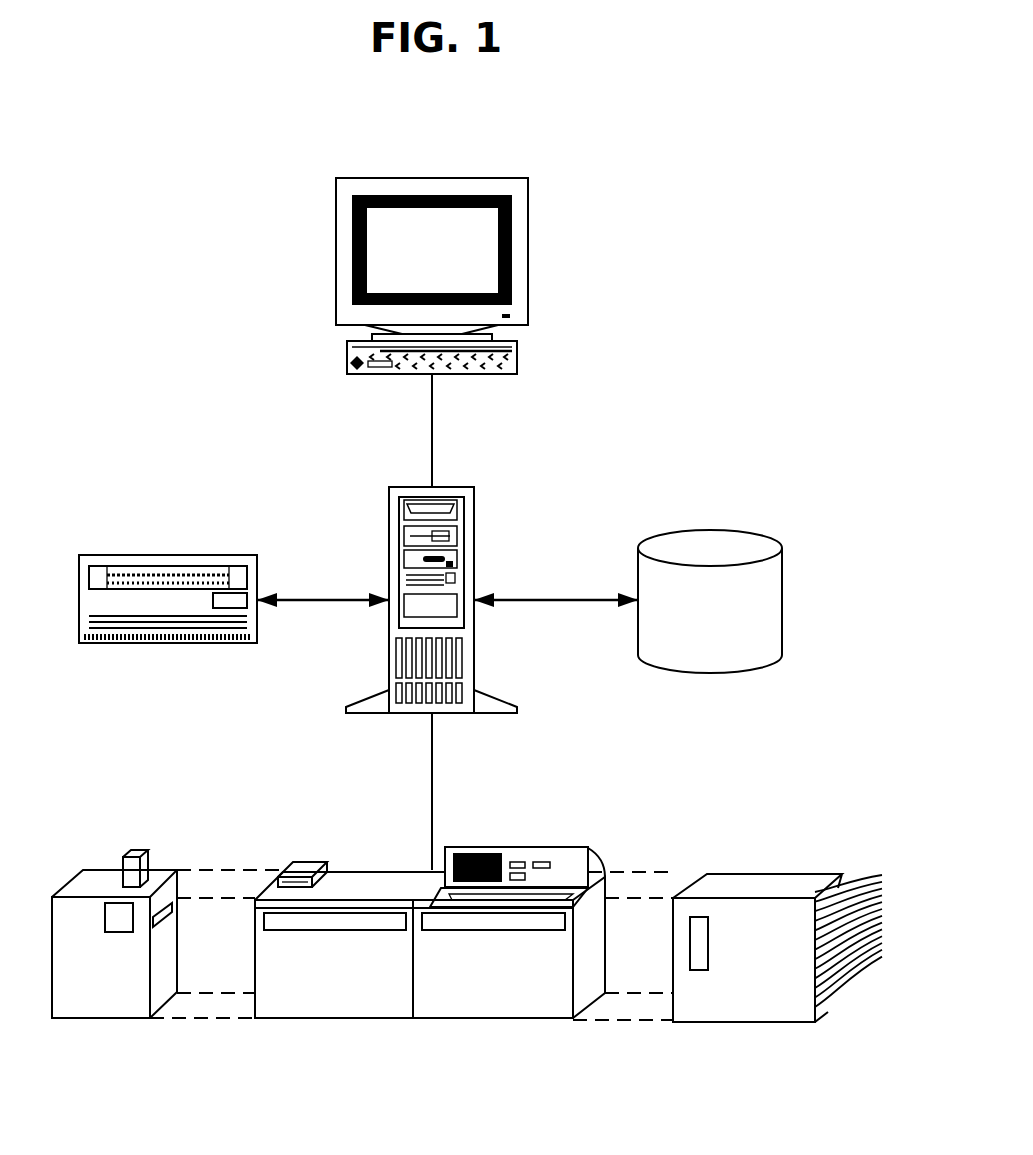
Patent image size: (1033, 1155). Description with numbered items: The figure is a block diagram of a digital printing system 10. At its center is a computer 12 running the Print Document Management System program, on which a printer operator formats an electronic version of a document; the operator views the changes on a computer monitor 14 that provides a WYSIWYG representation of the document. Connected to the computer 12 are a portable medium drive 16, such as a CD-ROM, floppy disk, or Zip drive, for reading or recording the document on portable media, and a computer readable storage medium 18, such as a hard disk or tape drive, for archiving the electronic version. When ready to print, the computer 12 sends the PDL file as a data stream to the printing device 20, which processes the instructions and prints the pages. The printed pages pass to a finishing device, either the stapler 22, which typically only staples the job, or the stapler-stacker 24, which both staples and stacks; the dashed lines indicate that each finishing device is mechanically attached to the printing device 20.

The digital printing system 10 is at (715, 241).
The computer 12 is at (455, 487).
The computer monitor 14 is at (500, 178).
The portable medium drive 16 is at (195, 555).
The computer readable storage medium 18 is at (745, 532).
The printing device 20 is at (365, 870).
The stapler 22 is at (165, 870).
The stapler-stacker 24 is at (740, 874).